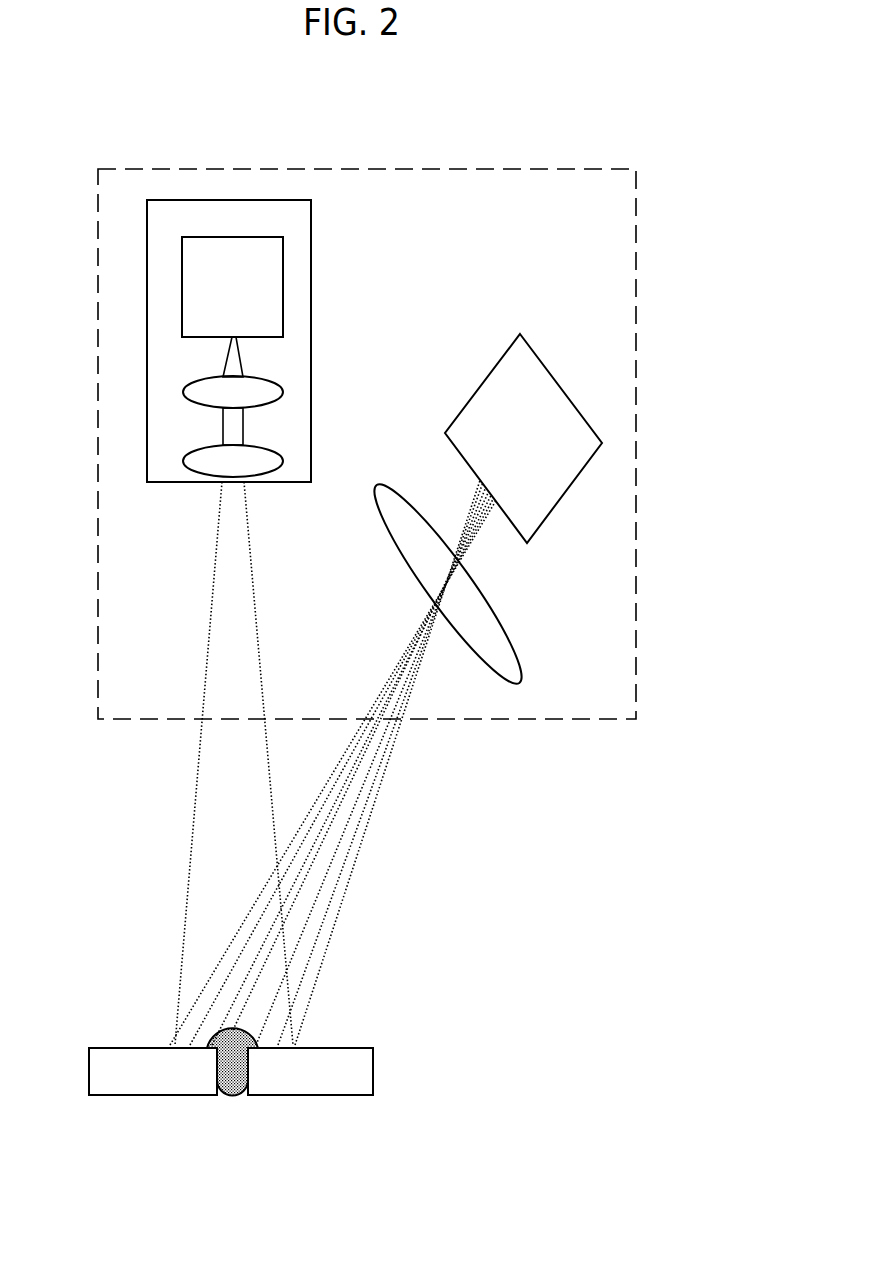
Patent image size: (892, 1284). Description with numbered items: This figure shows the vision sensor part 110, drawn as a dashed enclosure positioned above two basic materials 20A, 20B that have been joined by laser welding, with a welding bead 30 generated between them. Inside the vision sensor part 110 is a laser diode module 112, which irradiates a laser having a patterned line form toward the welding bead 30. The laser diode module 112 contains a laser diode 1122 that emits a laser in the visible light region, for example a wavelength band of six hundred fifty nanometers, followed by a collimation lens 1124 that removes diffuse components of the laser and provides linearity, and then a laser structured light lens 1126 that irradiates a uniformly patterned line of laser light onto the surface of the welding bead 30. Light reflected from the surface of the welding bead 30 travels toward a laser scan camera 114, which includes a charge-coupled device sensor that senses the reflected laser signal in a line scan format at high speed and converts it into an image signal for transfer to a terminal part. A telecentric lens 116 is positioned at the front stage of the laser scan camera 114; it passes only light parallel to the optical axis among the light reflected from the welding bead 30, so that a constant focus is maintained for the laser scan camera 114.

The vision sensor part 110 is at (419, 170).
The laser diode module 112 is at (147, 216).
The laser diode 1122 is at (190, 285).
The collimation lens 1124 is at (190, 392).
The laser structured light lens 1126 is at (195, 462).
The laser scan camera 114 is at (577, 461).
The telecentric lens 116 is at (499, 660).
The basic material 20A is at (148, 1083).
The basic material 20B is at (328, 1083).
The welding bead 30 is at (235, 1082).